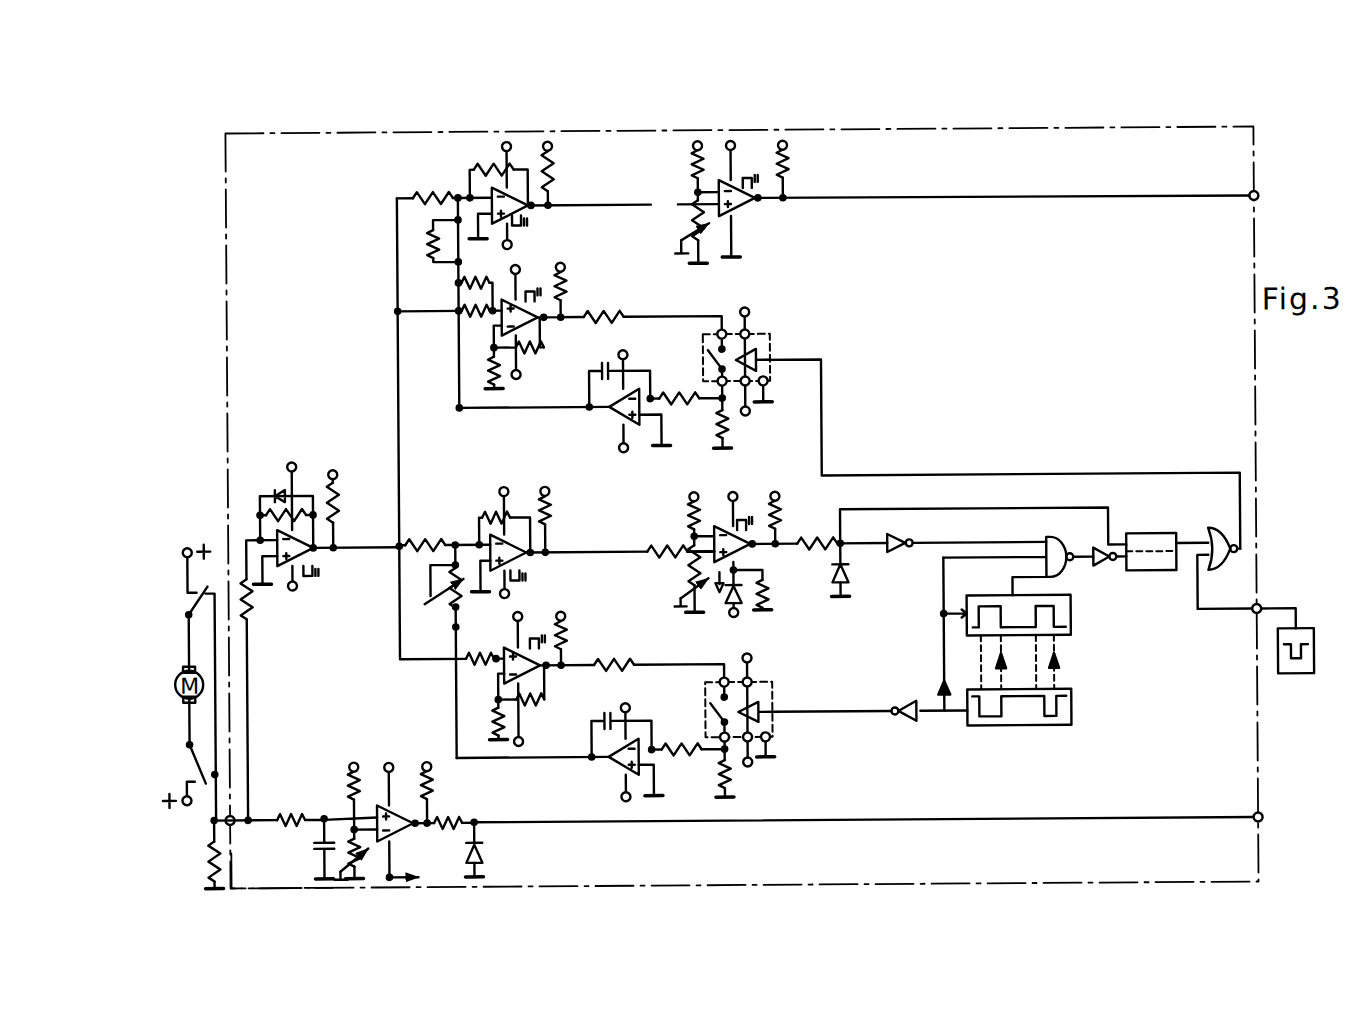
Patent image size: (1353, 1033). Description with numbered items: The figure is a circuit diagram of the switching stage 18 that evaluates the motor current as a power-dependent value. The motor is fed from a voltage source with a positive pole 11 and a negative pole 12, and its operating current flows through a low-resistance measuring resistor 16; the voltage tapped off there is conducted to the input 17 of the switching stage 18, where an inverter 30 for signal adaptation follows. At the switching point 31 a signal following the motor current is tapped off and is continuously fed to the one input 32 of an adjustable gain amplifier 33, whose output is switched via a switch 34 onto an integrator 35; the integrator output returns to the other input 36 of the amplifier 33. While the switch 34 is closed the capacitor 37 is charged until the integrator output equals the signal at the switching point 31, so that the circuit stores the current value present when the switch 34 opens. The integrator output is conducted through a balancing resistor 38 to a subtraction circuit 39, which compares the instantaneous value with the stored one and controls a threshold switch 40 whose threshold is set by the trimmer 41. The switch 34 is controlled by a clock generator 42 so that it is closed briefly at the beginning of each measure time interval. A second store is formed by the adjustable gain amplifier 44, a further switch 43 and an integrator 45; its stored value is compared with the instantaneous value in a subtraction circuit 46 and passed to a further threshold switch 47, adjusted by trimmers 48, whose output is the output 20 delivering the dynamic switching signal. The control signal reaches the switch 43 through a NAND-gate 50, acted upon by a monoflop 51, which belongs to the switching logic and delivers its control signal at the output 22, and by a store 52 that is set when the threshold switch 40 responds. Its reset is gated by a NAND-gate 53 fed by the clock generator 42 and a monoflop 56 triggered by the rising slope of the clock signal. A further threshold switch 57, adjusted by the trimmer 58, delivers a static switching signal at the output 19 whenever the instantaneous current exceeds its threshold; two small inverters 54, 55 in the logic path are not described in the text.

The positive pole 11 is at (187, 544).
The negative pole 12 is at (225, 878).
The low-resistance resistor 16 is at (207, 858).
The input 17 is at (229, 812).
The switching stage 18 is at (256, 188).
The output 19 is at (1261, 820).
The output 20 is at (1261, 199).
The output 22 is at (1261, 609).
The inverter 30 is at (316, 593).
The switching point 31 is at (397, 540).
The input 32 is at (420, 662).
The adjustable gain amplifier 33 is at (539, 618).
The switch 34 is at (707, 712).
The integrator 35 is at (611, 771).
The input 36 is at (455, 627).
The capacitor 37 is at (608, 712).
The balancing resistor 38 is at (431, 610).
The subtraction circuit 39 is at (523, 493).
The threshold switch 40 is at (749, 493).
The trimmer 41 is at (681, 582).
The clock generator 42 is at (1070, 713).
The switch 43 is at (712, 362).
The adjustable gain amplifier 44 is at (539, 275).
The integrator 45 is at (612, 427).
The subtraction circuit 46 is at (462, 186).
The threshold switch 47 is at (754, 219).
The trimmers 48 is at (710, 258).
The NAND-gate 50 is at (1220, 571).
The monoflop 51 is at (1300, 678).
The store 52 is at (1160, 536).
The NAND-gate 53 is at (1060, 544).
The inverter 54 is at (913, 540).
The inverter 55 is at (1112, 563).
The monoflop 56 is at (1072, 612).
The threshold switch 57 is at (392, 753).
The trimmer 58 is at (367, 853).